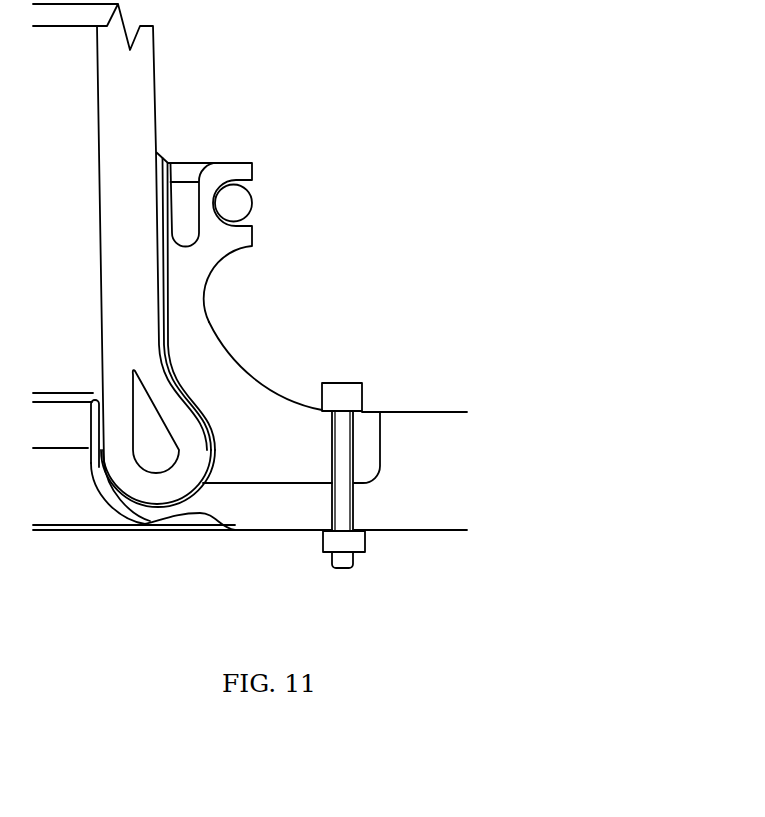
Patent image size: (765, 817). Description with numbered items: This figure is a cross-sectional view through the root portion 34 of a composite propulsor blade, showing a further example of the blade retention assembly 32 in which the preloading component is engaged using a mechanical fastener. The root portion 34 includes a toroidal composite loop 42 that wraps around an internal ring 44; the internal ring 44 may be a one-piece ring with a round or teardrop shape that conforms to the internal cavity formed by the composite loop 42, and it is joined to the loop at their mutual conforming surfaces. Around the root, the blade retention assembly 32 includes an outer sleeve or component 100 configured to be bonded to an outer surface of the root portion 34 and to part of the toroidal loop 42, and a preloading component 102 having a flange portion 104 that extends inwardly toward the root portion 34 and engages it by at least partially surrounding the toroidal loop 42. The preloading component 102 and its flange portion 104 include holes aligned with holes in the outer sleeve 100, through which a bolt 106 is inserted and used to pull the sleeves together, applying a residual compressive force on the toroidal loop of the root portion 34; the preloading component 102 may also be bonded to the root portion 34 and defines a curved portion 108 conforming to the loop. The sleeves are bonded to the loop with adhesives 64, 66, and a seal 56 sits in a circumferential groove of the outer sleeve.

The blade retention assembly 32 is at (447, 577).
The root portion 34 is at (118, 227).
The toroidal composite loop 42 is at (160, 490).
The internal ring 44 is at (155, 433).
The seal 56 is at (250, 207).
The adhesive 64 is at (97, 396).
The adhesive 66 is at (163, 160).
The outer sleeve 100 is at (243, 398).
The preloading component 102 is at (415, 427).
The flange portion 104 is at (272, 509).
The bolt 106 is at (340, 423).
The curved portion 108 is at (108, 498).